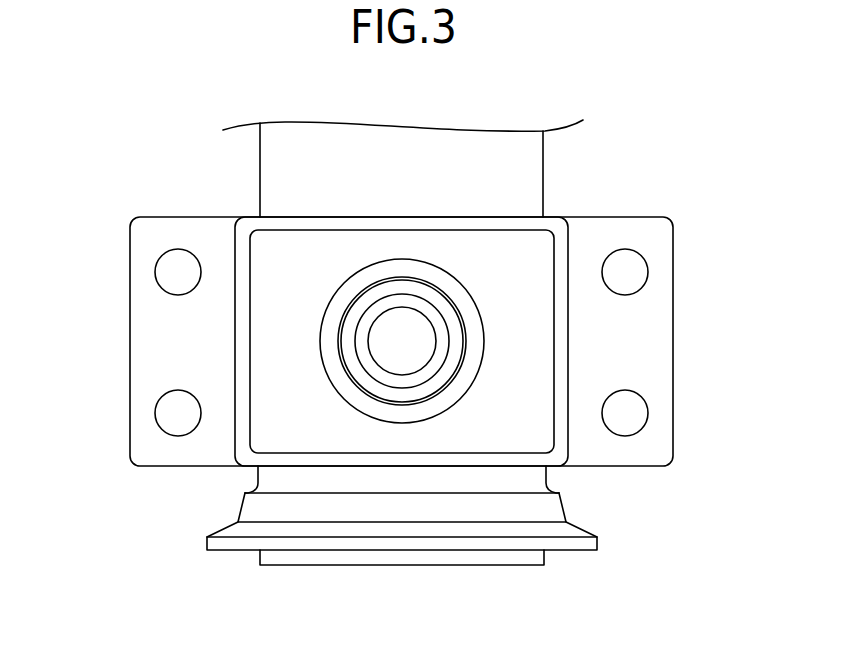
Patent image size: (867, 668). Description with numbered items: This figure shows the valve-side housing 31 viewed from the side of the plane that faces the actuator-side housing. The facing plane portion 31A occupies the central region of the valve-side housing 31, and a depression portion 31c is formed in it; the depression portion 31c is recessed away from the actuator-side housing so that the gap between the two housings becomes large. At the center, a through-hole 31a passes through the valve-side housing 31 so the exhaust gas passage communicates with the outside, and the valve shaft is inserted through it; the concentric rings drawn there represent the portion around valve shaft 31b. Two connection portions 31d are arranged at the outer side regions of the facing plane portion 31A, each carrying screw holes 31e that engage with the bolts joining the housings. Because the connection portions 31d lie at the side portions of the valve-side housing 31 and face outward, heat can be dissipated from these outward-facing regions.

The valve-side housing 31 is at (687, 208).
The facing plane portion 31A is at (395, 223).
The through-hole 31a is at (405, 333).
The portion around valve shaft 31b is at (462, 380).
The depression portion 31c is at (303, 405).
The connection portion 31d is at (152, 343).
The screw hole 31e is at (168, 272).